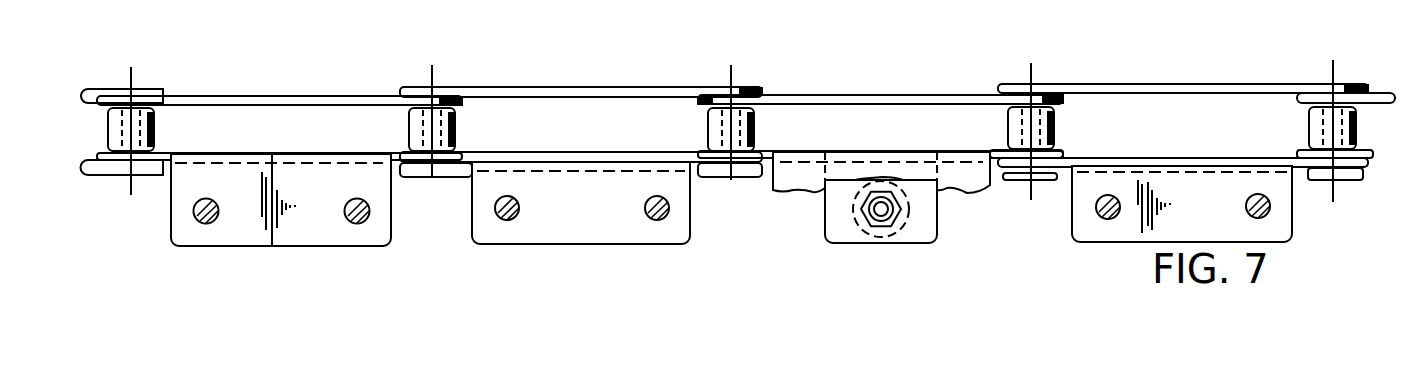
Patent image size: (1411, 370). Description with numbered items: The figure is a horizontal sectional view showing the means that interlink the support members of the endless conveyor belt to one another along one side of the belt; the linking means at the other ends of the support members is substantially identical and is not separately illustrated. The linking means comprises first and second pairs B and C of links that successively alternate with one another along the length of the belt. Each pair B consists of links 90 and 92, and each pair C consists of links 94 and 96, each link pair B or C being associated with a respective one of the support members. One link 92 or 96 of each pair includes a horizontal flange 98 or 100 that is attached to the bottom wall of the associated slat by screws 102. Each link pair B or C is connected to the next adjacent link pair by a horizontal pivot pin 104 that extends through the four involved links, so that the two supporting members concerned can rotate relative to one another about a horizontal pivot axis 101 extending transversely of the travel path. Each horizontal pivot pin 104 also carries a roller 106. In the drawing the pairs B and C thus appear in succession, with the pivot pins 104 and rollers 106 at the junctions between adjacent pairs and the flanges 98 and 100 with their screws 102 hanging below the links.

The link 90 is at (333, 97).
The link 92 is at (347, 170).
The link 94 is at (657, 88).
The link 96 is at (648, 147).
The horizontal flange 98 is at (383, 223).
The horizontal flange 100 is at (683, 230).
The horizontal pivot axis 101 is at (134, 76).
The screws 102 is at (645, 207).
The horizontal pivot pin 104 is at (442, 84).
The roller 106 is at (453, 128).
The first pair of links B is at (289, 71).
The second pair of links C is at (593, 79).